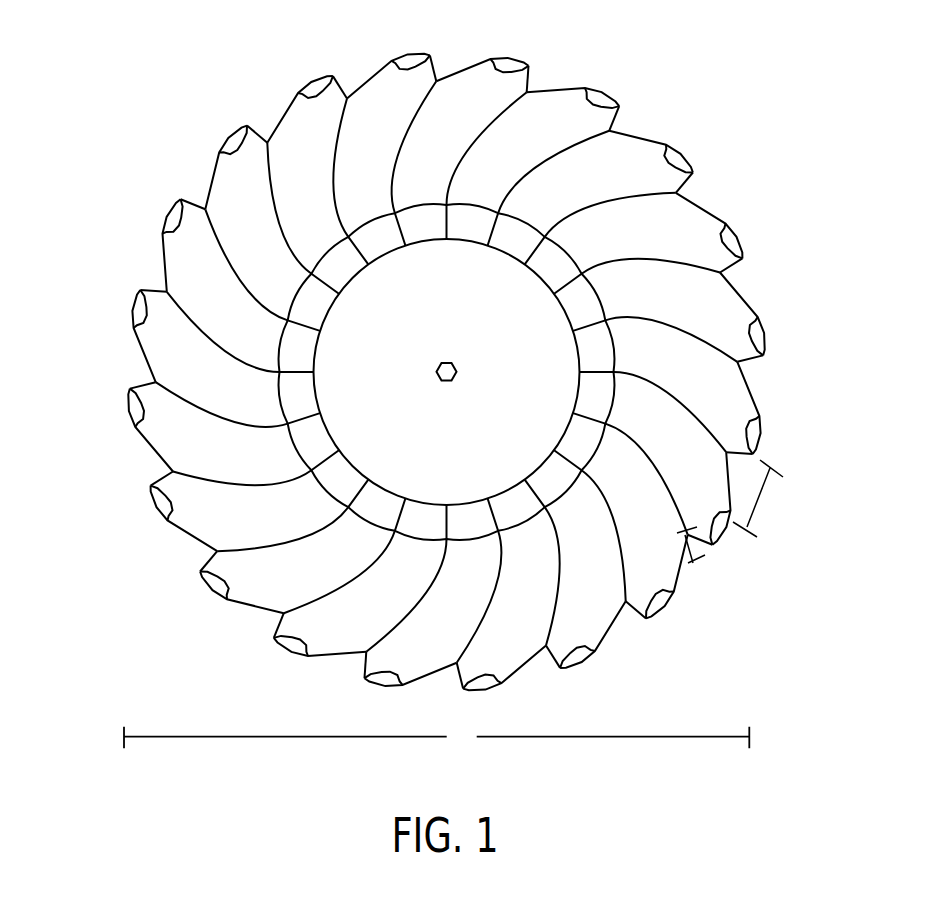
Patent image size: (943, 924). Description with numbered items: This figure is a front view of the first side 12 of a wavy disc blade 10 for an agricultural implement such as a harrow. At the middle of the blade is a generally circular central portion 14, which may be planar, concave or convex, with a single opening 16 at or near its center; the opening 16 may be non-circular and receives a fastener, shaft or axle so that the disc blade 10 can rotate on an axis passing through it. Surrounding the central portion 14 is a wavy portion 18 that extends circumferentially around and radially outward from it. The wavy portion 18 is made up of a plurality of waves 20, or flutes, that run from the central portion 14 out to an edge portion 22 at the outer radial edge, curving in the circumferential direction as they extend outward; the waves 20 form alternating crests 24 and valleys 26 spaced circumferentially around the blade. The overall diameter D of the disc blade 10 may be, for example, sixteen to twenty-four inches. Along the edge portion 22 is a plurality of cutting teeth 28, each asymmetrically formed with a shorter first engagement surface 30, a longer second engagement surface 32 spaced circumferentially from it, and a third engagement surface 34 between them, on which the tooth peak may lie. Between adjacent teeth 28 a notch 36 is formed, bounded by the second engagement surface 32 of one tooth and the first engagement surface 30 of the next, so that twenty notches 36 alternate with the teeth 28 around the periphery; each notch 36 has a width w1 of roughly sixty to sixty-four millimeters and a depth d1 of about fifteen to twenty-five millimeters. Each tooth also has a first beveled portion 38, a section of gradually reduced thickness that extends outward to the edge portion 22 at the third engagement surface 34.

The wavy disc blade 10 is at (184, 92).
The first side 12 is at (740, 397).
The central portion 14 is at (493, 426).
The opening 16 is at (446, 358).
The wavy portion 18 is at (631, 142).
The waves 20 is at (470, 80).
The edge portion 22 is at (288, 106).
The crests 24 is at (690, 219).
The valleys 26 is at (746, 316).
The cutting teeth 28 is at (178, 237).
The first engagement surface 30 is at (204, 209).
The second engagement surface 32 is at (212, 172).
The third engagement surface 34 is at (228, 137).
The notch 36 is at (348, 97).
The first beveled portion 38 is at (132, 405).
The notch width w1 is at (760, 507).
The notch depth d1 is at (700, 557).
The diameter D is at (436, 737).